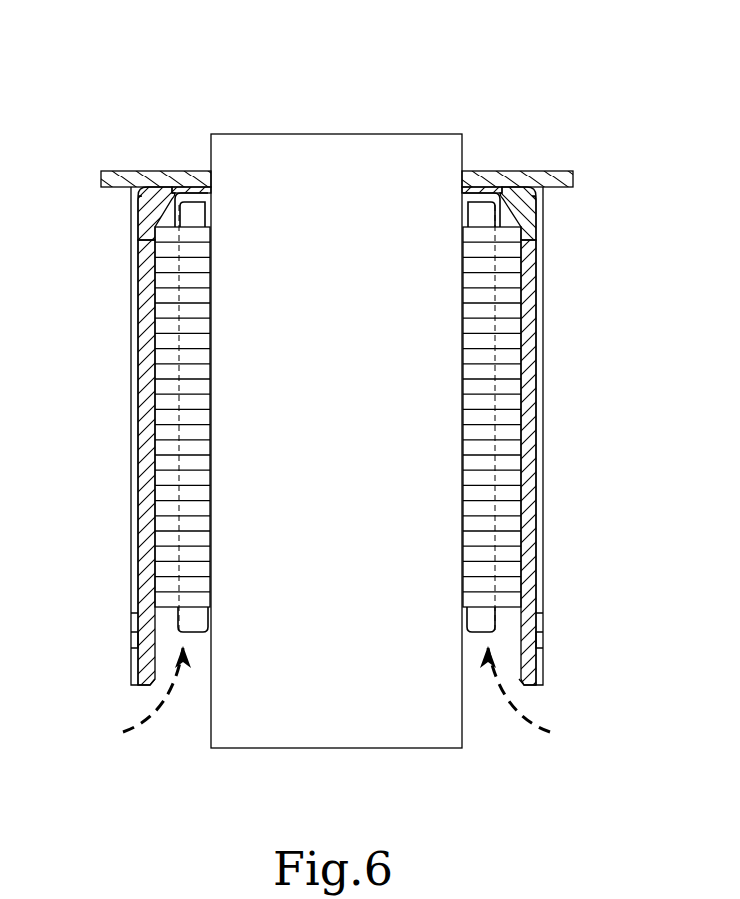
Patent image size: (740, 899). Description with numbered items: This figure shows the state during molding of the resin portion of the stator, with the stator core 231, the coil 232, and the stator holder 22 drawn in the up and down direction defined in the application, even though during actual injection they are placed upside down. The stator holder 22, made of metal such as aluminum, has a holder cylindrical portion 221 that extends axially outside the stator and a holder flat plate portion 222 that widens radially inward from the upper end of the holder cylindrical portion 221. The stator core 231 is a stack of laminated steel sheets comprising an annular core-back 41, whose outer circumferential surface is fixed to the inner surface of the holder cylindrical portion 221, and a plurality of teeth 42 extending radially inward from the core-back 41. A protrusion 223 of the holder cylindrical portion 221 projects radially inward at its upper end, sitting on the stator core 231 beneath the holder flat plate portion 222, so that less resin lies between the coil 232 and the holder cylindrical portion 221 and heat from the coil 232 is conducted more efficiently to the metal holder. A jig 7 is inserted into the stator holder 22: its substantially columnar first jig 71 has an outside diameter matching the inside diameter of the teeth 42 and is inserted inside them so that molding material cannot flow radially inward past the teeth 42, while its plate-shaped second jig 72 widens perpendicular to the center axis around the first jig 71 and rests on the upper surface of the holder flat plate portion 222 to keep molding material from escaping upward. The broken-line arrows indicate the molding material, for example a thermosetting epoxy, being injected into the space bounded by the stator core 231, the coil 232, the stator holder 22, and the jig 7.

The jig 7 is at (238, 58).
The first jig 71 is at (248, 155).
The second jig 72 is at (165, 177).
The stator holder 22 is at (122, 633).
The holder cylindrical portion 221 is at (528, 292).
The holder flat plate portion 222 is at (480, 188).
The protrusion 223 is at (508, 213).
The stator core 231 is at (615, 430).
The coil 232 is at (487, 617).
The core-back 41 is at (505, 428).
The teeth 42 is at (487, 463).